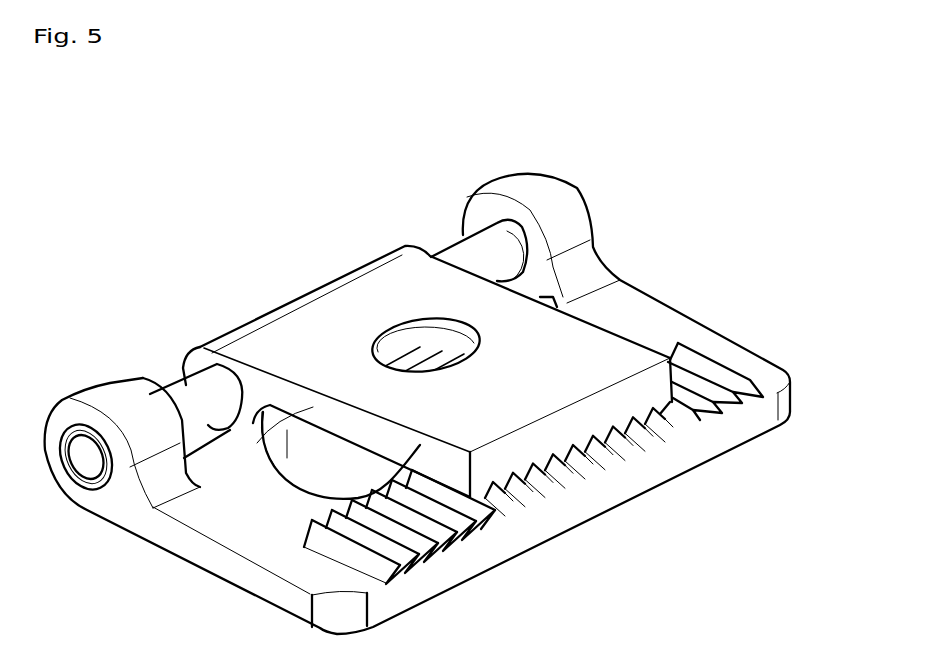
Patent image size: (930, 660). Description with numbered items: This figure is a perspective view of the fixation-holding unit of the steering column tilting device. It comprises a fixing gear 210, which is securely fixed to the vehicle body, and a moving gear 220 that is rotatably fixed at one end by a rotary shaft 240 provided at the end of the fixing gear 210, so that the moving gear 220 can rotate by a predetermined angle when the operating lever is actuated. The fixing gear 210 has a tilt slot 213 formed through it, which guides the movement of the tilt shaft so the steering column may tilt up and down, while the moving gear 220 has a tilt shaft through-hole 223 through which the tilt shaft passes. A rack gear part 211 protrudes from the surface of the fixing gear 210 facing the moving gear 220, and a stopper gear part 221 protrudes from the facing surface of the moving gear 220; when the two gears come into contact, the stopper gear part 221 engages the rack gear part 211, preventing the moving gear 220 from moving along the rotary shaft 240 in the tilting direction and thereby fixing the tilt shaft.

The fixing gear 210 is at (217, 518).
The rack gear part 211 is at (440, 532).
The tilt slot 213 is at (325, 479).
The moving gear 220 is at (423, 267).
The stopper gear part 221 is at (603, 430).
The tilt shaft through-hole 223 is at (420, 339).
The rotary shaft 240 is at (177, 400).